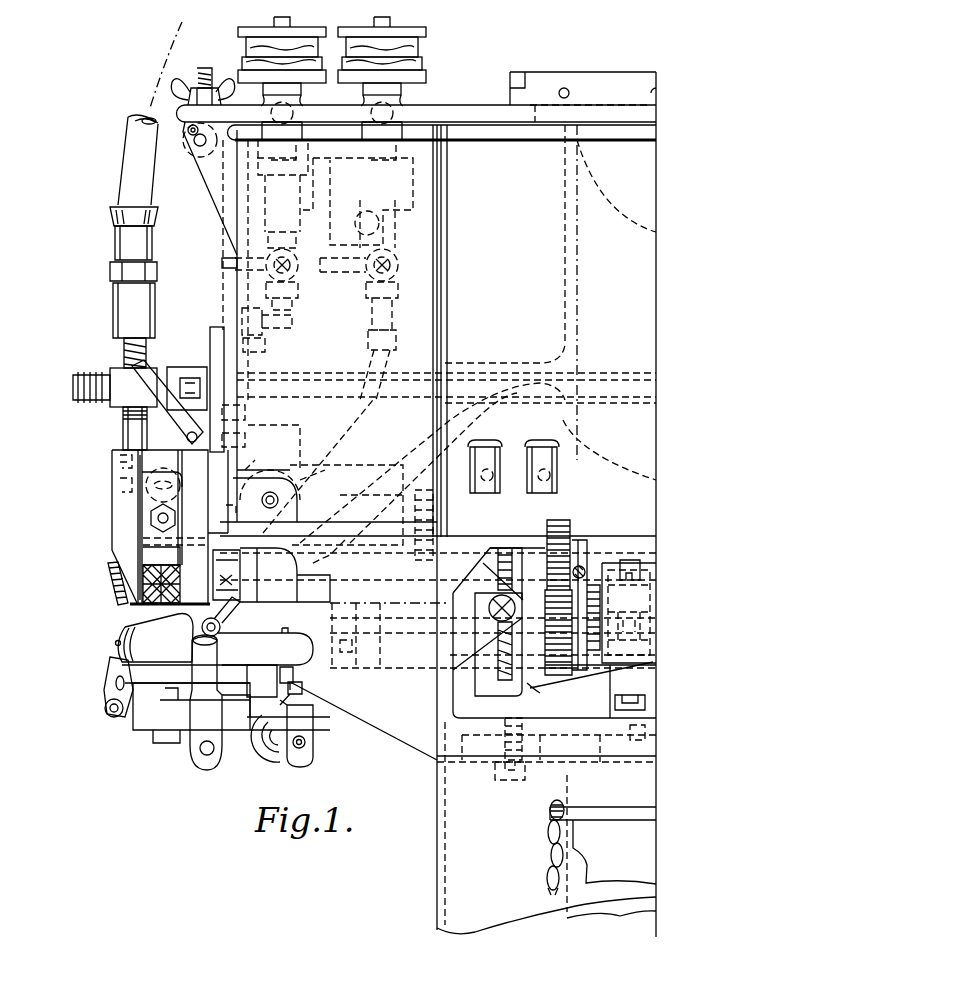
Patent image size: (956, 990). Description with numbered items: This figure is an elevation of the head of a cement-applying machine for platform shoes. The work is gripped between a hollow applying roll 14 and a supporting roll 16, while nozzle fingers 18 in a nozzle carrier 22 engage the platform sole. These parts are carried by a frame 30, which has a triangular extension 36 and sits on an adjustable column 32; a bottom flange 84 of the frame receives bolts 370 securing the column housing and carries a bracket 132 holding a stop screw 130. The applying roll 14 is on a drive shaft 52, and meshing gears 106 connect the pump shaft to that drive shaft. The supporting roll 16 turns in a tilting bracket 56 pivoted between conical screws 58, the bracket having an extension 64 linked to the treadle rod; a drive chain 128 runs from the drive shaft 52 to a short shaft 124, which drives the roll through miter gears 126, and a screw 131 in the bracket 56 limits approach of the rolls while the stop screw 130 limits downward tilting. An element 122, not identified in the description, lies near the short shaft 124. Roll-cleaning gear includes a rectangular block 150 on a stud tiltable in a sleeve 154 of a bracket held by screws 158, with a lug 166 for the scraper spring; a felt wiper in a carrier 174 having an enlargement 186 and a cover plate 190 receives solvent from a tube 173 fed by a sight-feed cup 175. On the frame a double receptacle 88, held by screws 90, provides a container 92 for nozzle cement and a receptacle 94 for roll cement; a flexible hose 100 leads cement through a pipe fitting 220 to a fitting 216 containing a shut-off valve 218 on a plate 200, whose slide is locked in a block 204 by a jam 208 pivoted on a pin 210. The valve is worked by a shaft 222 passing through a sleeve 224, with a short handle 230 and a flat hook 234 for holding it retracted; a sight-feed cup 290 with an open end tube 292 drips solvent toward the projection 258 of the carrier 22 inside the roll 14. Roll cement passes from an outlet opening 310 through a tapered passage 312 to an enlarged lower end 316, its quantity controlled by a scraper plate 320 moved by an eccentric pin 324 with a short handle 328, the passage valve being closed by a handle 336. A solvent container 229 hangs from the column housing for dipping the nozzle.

The hollow applying roll 14 is at (148, 606).
The supporting roll 16 is at (165, 634).
The nozzle fingers 18 is at (108, 580).
The nozzle carrier 22 is at (138, 507).
The frame 30 is at (364, 735).
The adjustable column 32 is at (453, 837).
The triangular extension 36 is at (346, 505).
The drive shaft 52 is at (371, 505).
The tilting bracket 56 is at (283, 651).
The conical screws 58 is at (554, 633).
The extension 64 is at (605, 664).
The bottom flange 84 is at (487, 732).
The double receptacle 88 is at (236, 291).
The screws 90 is at (453, 540).
The container 92 is at (622, 464).
The receptacle 94 is at (414, 474).
The flexible hose 100 is at (128, 136).
The meshing gears 106 is at (557, 606).
The support 122 is at (405, 685).
The short shaft 124 is at (350, 622).
The miter gears 126 is at (312, 606).
The drive chain 128 is at (505, 545).
The stop screw 130 is at (618, 556).
The screw 131 is at (302, 688).
The bracket 132 is at (608, 714).
The rectangular block 150 is at (165, 728).
The sleeve 154 is at (290, 765).
The screws 158 is at (270, 762).
The lug 166 is at (304, 753).
The tube 173 is at (233, 616).
The carrier 174 is at (106, 713).
The sight-feed cup 175 is at (420, 75).
The enlargement 186 is at (214, 650).
The cover plate 190 is at (112, 694).
The plate 200 is at (112, 458).
The block 204 is at (150, 516).
The jam 208 is at (235, 441).
The pin 210 is at (235, 413).
The fitting 216 is at (128, 426).
The shut-off valve 218 is at (76, 393).
The pipe fitting 220 is at (125, 352).
The shaft 222 is at (447, 352).
The sleeve 224 is at (590, 376).
The solvent container 229 is at (585, 848).
The short handle 230 is at (212, 350).
The flat hook 234 is at (236, 402).
The projection 258 is at (112, 593).
The sight-feed cup 290 is at (252, 46).
The open end tube 292 is at (240, 351).
The outlet opening 310 is at (291, 447).
The tapered passage 312 is at (245, 511).
The lower end of passage 316 is at (326, 525).
The scraper plate 320 is at (152, 556).
The eccentric pin 324 is at (144, 483).
The short handle 328 is at (244, 466).
The handle 336 is at (124, 416).
The bolts 370 is at (493, 782).